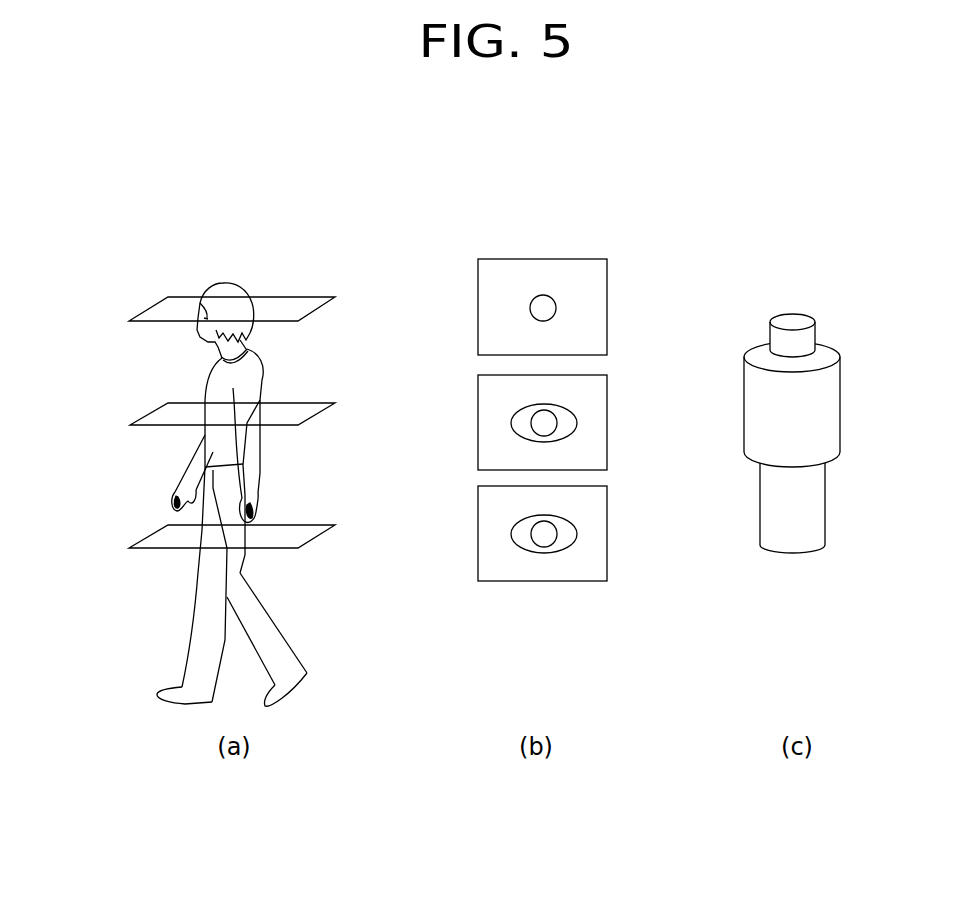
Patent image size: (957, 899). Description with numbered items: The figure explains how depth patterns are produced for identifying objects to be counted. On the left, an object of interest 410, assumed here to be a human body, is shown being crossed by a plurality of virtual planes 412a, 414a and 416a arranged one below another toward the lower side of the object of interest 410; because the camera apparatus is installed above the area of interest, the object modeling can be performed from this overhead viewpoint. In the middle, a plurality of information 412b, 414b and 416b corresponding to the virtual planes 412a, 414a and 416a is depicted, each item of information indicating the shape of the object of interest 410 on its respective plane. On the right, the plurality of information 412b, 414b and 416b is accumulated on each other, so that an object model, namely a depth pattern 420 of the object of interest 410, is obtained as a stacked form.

The object of interest 410 is at (243, 273).
The virtual plane 412a is at (140, 308).
The virtual plane 414a is at (140, 413).
The virtual plane 416a is at (140, 534).
The information 412b is at (475, 308).
The information 414b is at (475, 422).
The information 416b is at (475, 533).
The depth pattern 420 is at (803, 305).